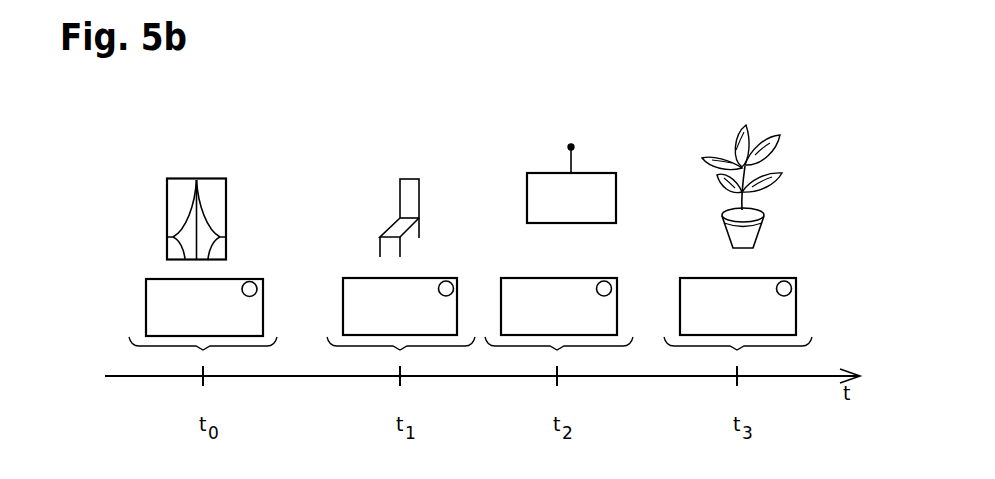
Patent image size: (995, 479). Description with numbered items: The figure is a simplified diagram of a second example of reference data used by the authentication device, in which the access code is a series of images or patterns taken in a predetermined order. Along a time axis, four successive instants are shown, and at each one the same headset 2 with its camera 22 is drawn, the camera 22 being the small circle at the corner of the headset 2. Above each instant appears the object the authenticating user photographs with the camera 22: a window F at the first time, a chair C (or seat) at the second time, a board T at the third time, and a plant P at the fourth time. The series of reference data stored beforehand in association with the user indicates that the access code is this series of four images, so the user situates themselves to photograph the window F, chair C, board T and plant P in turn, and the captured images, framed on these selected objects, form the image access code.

The headset 2 is at (203, 320).
The camera 22 is at (257, 289).
The window F is at (221, 178).
The chair C is at (409, 179).
The board T is at (600, 173).
The plant P is at (747, 203).